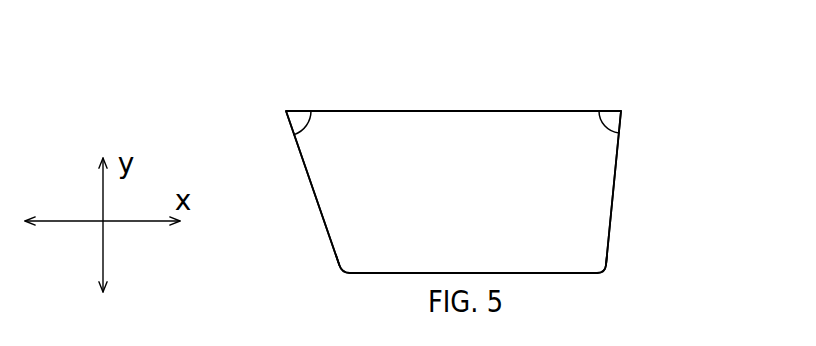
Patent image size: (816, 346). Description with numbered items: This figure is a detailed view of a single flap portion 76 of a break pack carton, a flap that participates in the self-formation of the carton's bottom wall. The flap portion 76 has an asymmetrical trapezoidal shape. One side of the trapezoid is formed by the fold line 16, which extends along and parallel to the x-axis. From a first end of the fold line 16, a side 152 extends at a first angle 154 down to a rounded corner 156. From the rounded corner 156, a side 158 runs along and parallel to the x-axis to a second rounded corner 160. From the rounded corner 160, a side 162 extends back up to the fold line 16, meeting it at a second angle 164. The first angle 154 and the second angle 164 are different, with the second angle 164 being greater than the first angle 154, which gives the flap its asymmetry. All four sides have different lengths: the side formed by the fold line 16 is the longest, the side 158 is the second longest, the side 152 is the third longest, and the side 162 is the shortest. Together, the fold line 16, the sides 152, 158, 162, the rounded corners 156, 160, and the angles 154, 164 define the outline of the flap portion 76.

The fold line 16 is at (535, 110).
The flap portion 76 is at (455, 190).
The side 152 is at (313, 192).
The first angle 154 is at (306, 125).
The rounded corner 156 is at (352, 258).
The side 158 is at (467, 273).
The rounded corner 160 is at (593, 257).
The side 162 is at (615, 188).
The second angle 164 is at (602, 122).